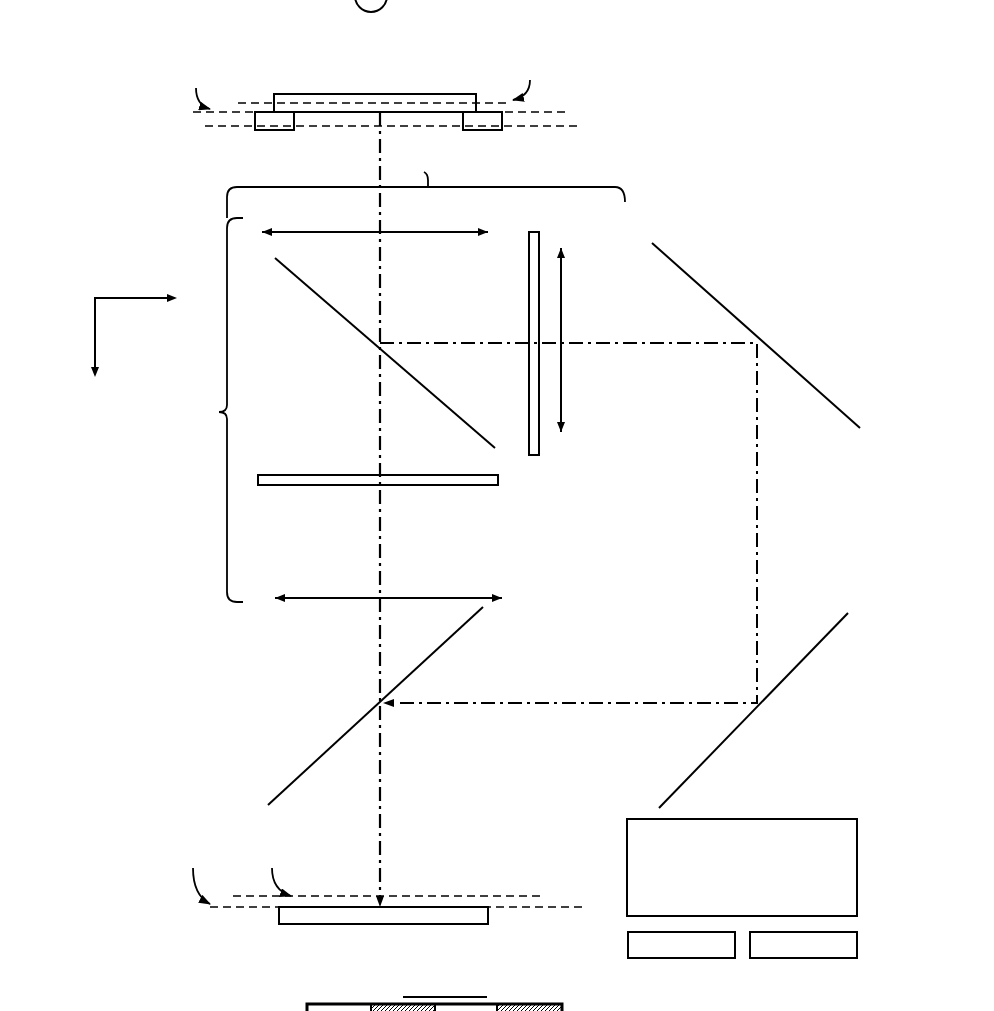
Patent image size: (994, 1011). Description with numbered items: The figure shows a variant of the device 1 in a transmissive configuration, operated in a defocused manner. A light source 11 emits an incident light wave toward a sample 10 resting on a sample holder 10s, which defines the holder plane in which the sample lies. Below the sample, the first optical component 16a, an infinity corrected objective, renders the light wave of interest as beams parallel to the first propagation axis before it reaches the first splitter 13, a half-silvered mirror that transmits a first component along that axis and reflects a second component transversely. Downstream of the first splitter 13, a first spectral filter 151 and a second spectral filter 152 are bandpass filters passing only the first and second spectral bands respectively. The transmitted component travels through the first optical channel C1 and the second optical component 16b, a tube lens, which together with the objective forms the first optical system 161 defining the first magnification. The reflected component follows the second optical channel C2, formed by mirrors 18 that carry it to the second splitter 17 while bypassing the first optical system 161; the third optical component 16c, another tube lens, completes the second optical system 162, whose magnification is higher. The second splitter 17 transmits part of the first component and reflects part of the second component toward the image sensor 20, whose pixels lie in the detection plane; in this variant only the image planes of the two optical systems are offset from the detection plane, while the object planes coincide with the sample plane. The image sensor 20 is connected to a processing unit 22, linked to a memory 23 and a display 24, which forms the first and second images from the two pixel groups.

The device 1 is at (82, 58).
The sample 10 is at (285, 90).
The sample holder 10s is at (256, 122).
The light source 11 is at (348, 5).
The first splitter 13 is at (296, 291).
The first spectral filter 151 is at (280, 472).
The second spectral filter 152 is at (545, 243).
The first optical system 161 is at (219, 412).
The second optical system 162 is at (426, 183).
The first optical component 16a is at (433, 240).
The second optical component 16b is at (300, 592).
The third optical component 16c is at (573, 411).
The second splitter 17 is at (477, 624).
The mirrors 18 is at (666, 246).
The image sensor 20 is at (306, 928).
The processing unit 22 is at (655, 950).
The memory 23 is at (792, 955).
The display 24 is at (742, 833).
The first optical channel C1 is at (386, 550).
The second optical channel C2 is at (609, 349).